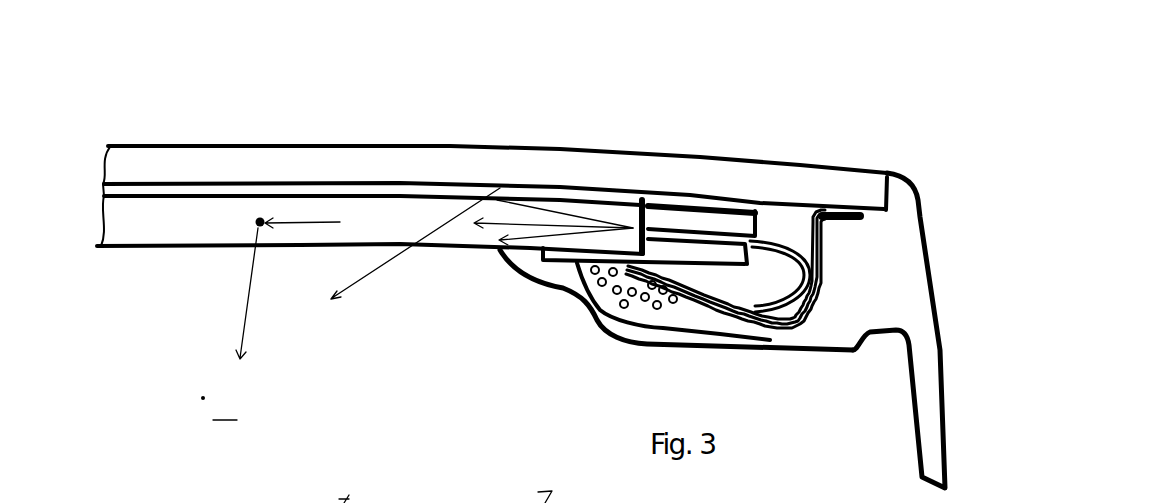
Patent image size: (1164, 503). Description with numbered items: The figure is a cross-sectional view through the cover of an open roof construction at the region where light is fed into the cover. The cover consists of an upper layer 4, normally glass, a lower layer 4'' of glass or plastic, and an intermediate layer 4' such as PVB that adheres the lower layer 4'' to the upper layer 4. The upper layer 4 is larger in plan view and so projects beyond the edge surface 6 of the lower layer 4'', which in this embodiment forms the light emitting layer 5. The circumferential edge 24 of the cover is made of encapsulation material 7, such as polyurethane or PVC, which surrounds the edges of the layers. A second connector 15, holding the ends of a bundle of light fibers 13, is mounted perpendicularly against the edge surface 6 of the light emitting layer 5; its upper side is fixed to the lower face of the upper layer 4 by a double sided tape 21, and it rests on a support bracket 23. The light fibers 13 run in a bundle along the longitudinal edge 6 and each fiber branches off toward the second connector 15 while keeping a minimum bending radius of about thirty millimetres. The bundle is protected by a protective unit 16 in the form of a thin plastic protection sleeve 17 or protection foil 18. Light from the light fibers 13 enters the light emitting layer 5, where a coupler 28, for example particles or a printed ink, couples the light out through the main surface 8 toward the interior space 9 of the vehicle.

The upper layer 4 is at (497, 106).
The intermediate layer 4' is at (494, 123).
The lower layer 4'' is at (427, 145).
The light emitting layer 5 is at (476, 238).
The edge surface 6 is at (590, 270).
The encapsulation material 7 is at (923, 230).
The main surface 8 is at (145, 247).
The interior space 9 is at (229, 325).
The light fibers 13 is at (797, 243).
The second connector 15 is at (750, 222).
The protective unit 16 is at (825, 276).
The protection sleeve 17 is at (825, 276).
The protection foil 18 is at (825, 276).
The double sided tape 21 is at (713, 207).
The support bracket 23 is at (590, 280).
The circumferential edge 24 is at (905, 213).
The coupler 28 is at (258, 218).